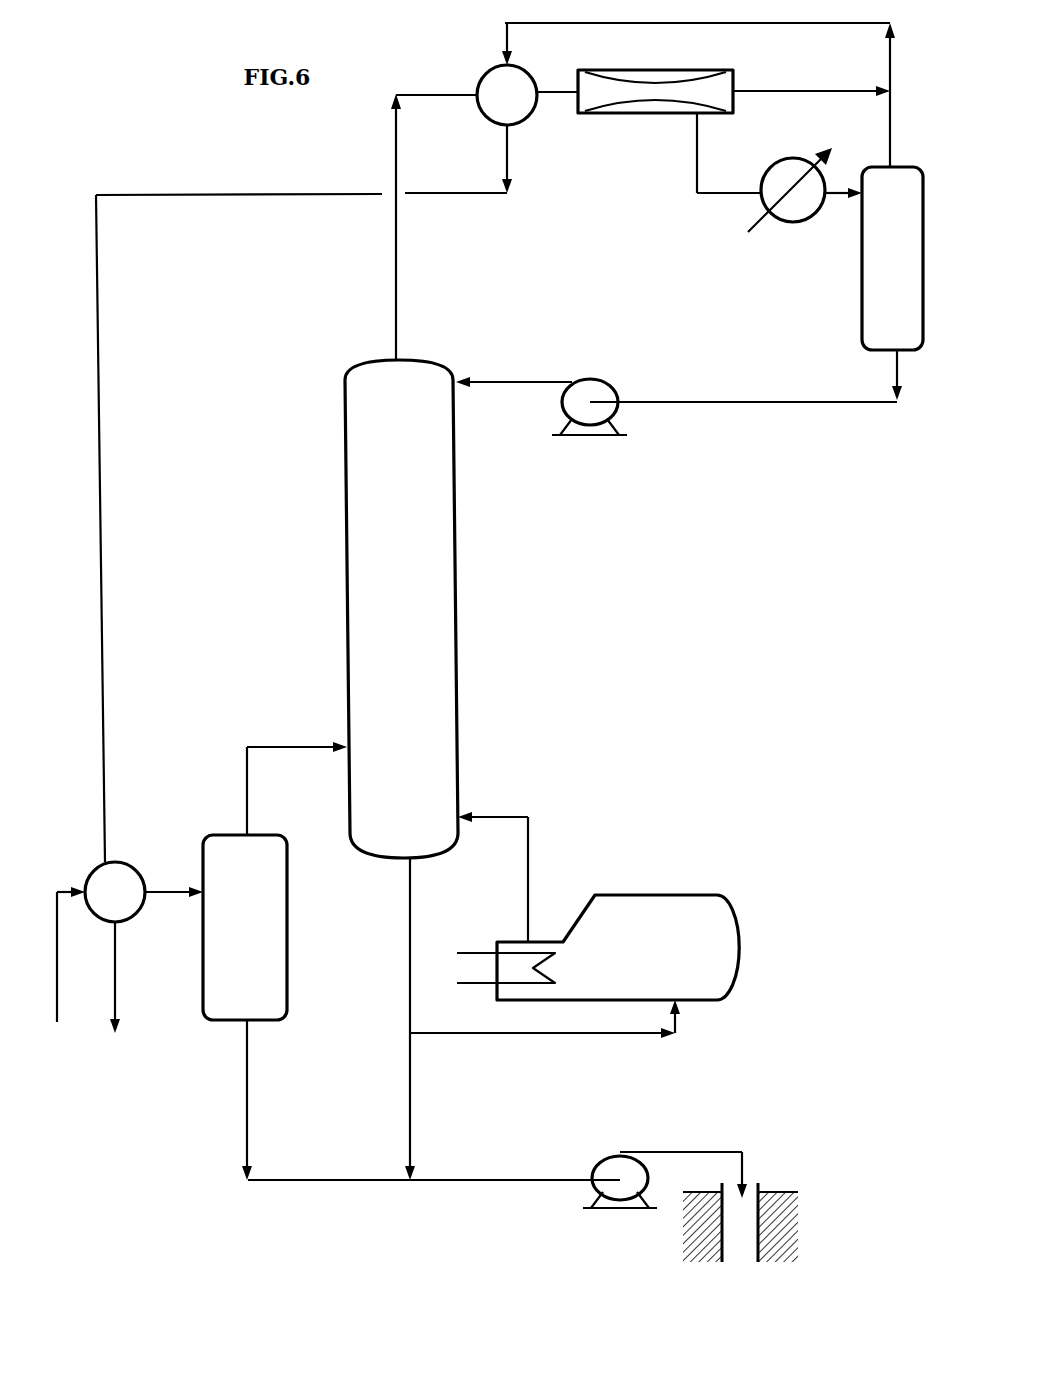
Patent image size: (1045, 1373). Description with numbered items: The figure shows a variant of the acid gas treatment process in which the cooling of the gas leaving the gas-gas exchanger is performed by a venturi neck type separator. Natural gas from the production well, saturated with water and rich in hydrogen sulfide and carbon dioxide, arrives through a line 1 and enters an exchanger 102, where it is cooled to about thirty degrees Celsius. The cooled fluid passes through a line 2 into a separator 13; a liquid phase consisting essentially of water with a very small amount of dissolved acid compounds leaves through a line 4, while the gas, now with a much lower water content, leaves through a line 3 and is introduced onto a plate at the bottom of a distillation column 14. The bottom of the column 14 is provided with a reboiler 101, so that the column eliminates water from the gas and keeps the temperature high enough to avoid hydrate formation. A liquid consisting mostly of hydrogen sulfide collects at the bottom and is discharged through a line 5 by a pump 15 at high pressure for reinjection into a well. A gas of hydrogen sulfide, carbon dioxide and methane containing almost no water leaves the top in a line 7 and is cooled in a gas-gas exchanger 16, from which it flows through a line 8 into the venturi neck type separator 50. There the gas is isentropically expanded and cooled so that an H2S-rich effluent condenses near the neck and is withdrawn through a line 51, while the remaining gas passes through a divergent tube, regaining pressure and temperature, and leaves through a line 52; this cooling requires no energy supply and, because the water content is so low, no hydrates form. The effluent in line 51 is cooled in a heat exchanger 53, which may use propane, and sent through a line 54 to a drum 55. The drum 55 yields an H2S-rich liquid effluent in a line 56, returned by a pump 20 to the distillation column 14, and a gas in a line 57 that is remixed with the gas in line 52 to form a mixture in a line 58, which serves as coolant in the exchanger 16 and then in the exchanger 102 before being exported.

The line 1 is at (57, 970).
The line 2 is at (176, 888).
The line 3 is at (248, 767).
The line 4 is at (248, 1040).
The line 5 is at (450, 1179).
The line 7 is at (396, 158).
The line 8 is at (553, 95).
The separator 13 is at (245, 927).
The column 14 is at (401, 609).
The pump 15 is at (618, 1166).
The gas-gas exchanger 16 is at (316, 442).
The pump 20 is at (608, 418).
The venturi neck type separator 50 is at (612, 113).
The line 51 is at (697, 193).
The line 52 is at (772, 92).
The heat exchanger 53 is at (785, 223).
The line 54 is at (830, 195).
The drum 55 is at (892, 258).
The line 56 is at (838, 402).
The line 57 is at (890, 130).
The line 58 is at (770, 24).
The reboiler 101 is at (572, 996).
The exchanger 102 is at (130, 947).